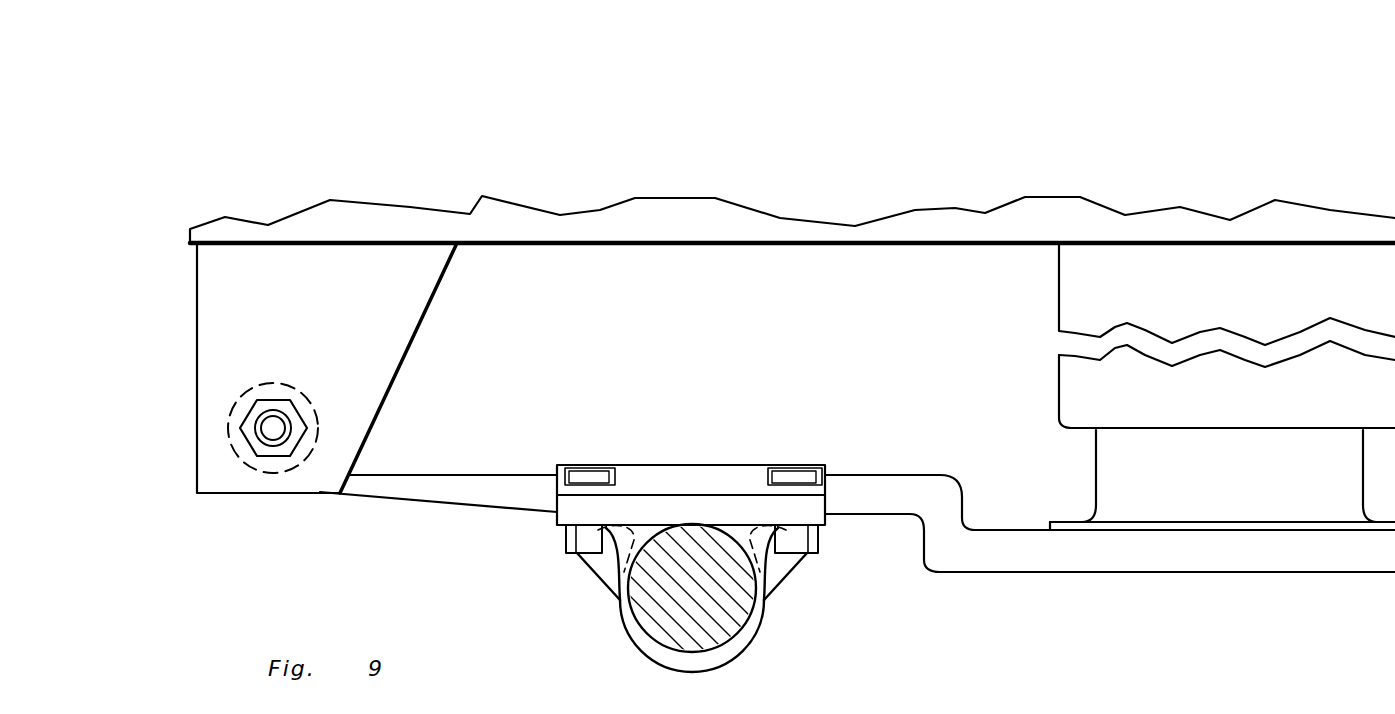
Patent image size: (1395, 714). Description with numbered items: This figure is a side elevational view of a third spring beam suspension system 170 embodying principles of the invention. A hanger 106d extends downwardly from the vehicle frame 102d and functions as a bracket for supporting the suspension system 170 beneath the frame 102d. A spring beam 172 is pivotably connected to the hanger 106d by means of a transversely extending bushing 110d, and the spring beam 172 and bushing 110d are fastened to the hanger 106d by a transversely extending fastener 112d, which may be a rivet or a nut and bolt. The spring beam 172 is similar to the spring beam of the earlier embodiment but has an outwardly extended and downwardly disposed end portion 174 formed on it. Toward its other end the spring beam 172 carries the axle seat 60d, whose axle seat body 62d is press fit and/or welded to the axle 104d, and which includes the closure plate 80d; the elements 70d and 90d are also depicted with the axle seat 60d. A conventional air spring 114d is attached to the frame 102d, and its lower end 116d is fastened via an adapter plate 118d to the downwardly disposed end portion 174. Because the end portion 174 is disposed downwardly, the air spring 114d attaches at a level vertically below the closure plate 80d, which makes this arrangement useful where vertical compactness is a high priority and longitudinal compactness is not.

The suspension system 170 is at (370, 128).
The vehicle frame 102d is at (655, 245).
The hanger 106d is at (415, 345).
The fastener 112d is at (237, 397).
The bushing 110d is at (230, 430).
The spring beam 172 is at (483, 470).
The lower mounting plate 70d is at (553, 507).
The closure plate 80d is at (687, 463).
The clamp ears 90d is at (563, 540).
The axle seat 60d is at (625, 666).
The axle seat body 62d is at (768, 620).
The axle 104d is at (745, 648).
The air spring 114d is at (1052, 386).
The lower end of the air spring 116d is at (1096, 478).
The adapter plate 118d is at (1065, 520).
The end portion 174 is at (1148, 573).